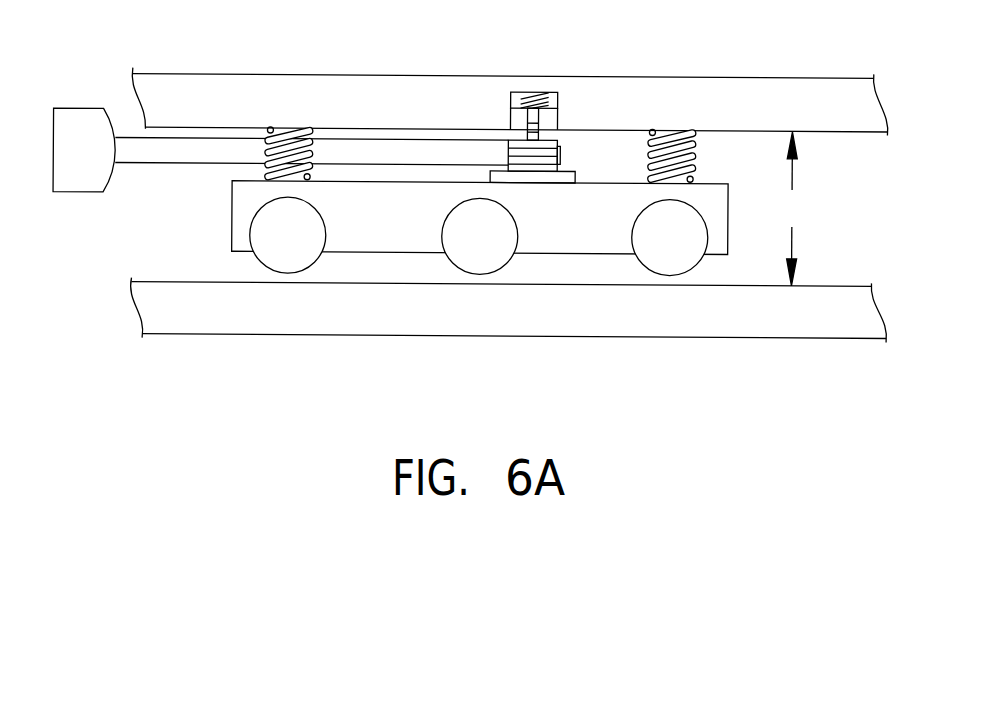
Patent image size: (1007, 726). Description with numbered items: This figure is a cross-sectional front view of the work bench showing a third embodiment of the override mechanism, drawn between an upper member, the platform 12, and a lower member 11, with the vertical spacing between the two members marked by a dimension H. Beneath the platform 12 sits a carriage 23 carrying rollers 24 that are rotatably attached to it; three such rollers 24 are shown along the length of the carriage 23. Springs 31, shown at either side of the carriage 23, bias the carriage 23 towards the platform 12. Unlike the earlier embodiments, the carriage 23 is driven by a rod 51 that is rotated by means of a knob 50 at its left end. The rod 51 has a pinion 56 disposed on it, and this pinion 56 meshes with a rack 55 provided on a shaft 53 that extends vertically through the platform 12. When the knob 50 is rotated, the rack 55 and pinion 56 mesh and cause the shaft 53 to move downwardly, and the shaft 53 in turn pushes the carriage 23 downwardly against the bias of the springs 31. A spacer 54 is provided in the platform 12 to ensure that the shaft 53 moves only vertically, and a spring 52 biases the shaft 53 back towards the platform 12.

The lower plate 11 is at (577, 325).
The platform 12 is at (767, 105).
The carriage 23 is at (587, 234).
The rollers 24 is at (497, 251).
The springs 31 is at (695, 156).
The knob 50 is at (85, 128).
The rod 51 is at (193, 154).
The spring 52 is at (552, 100).
The shaft 53 is at (510, 123).
The spacer 54 is at (557, 110).
The rack 55 is at (540, 133).
The pinion 56 is at (508, 157).
The height dimension H is at (790, 209).